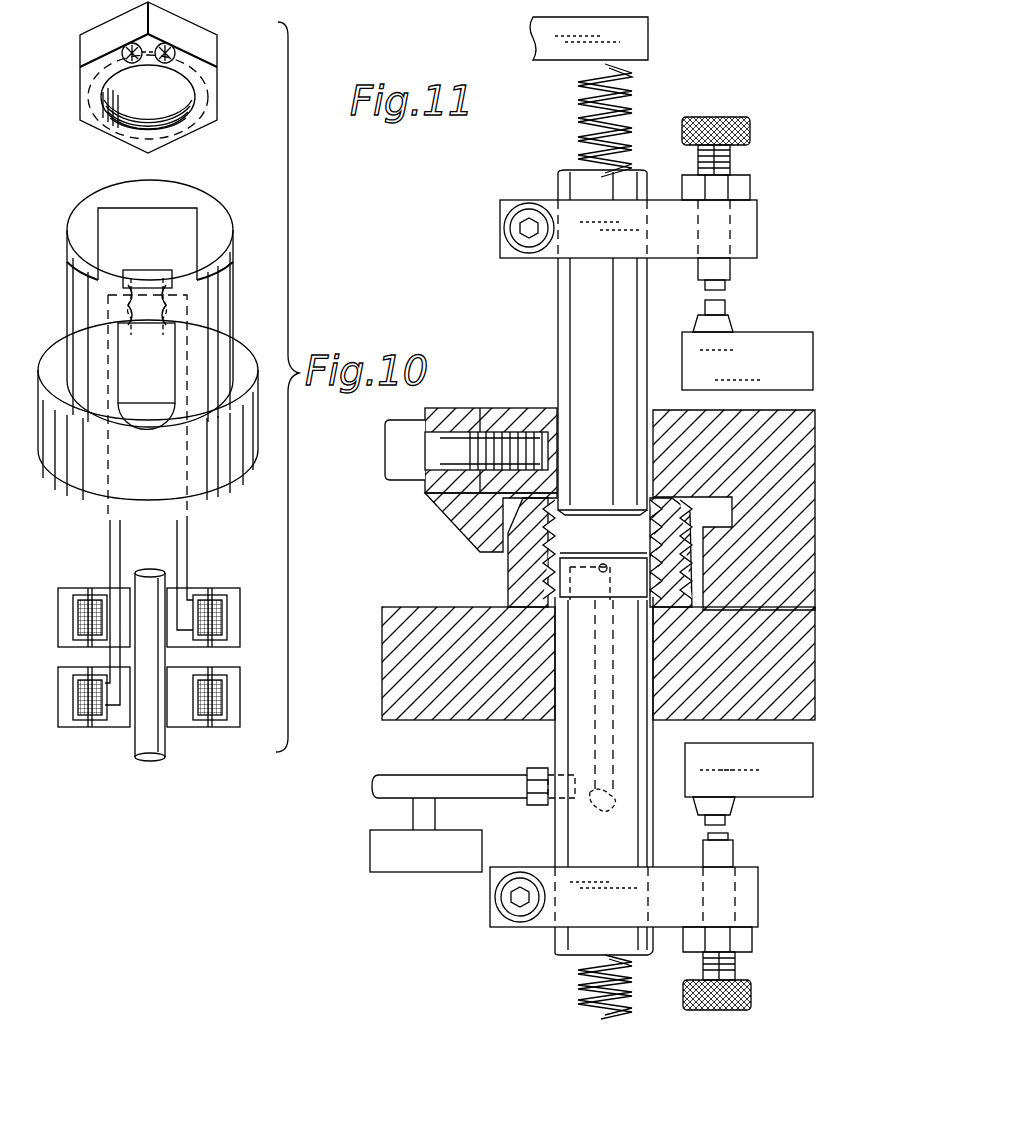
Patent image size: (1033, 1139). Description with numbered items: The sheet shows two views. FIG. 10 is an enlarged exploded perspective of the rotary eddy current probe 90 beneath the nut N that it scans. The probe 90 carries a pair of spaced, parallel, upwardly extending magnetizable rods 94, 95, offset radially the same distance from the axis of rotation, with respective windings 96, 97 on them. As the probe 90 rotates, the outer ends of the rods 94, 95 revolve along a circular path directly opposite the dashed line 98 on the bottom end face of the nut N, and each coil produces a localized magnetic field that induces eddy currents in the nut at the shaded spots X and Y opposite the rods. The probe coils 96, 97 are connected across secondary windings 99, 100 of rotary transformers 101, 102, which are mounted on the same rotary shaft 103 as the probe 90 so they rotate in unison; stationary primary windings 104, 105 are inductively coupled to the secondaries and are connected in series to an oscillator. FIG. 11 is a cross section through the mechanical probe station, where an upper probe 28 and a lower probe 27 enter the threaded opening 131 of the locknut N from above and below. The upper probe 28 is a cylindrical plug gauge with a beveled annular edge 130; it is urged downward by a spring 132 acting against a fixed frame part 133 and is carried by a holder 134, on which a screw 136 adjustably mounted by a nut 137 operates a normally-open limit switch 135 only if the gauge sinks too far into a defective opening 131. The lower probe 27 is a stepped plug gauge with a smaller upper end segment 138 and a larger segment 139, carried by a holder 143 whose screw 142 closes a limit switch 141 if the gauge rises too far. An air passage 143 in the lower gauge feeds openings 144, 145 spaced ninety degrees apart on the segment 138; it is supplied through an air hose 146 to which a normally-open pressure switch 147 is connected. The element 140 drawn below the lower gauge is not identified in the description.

In FIG. 10, the dashed line 98 is at (203, 115).
In FIG. 10, the shaded area X is at (175, 50).
In FIG. 10, the shaded area Y is at (122, 50).
In FIG. 10, the nut N is at (219, 70).
In FIG. 11, the nut N is at (508, 575).
In FIG. 10, the eddy current probe 90 is at (245, 284).
In FIG. 10, the magnetizable rod 94 is at (165, 272).
In FIG. 10, the magnetizable rod 95 is at (126, 272).
In FIG. 10, the winding 96 is at (135, 330).
In FIG. 10, the winding 97 is at (160, 310).
In FIG. 10, the secondary winding 99 is at (205, 600).
In FIG. 10, the secondary winding 100 is at (200, 718).
In FIG. 10, the rotary transformer 101 is at (243, 584).
In FIG. 10, the rotary transformer 102 is at (233, 732).
In FIG. 10, the rotary shaft 103 is at (143, 740).
In FIG. 10, the stationary primary winding 104 is at (220, 628).
In FIG. 10, the stationary primary winding 105 is at (220, 693).
In FIG. 11, the fixed part of the machine frame 133 is at (648, 35).
In FIG. 11, the spring 132 is at (620, 115).
In FIG. 11, the upper probe 28 is at (562, 332).
In FIG. 11, the holder 134 is at (550, 258).
In FIG. 11, the nut 137 is at (748, 196).
In FIG. 11, the screw 136 is at (732, 283).
In FIG. 11, the limit switch 135 is at (750, 345).
In FIG. 11, the beveled annular marginal edge 130 is at (575, 512).
In FIG. 11, the threaded opening 131 is at (553, 540).
In FIG. 11, the opening 145 is at (612, 560).
In FIG. 11, the upper end segment 138 is at (660, 548).
In FIG. 11, the opening 144 is at (540, 598).
In FIG. 11, the larger diameter segment 139 is at (650, 648).
In FIG. 11, the holder 143 is at (545, 927).
In FIG. 11, the lower probe 27 is at (555, 740).
In FIG. 11, the air hose 146 is at (400, 775).
In FIG. 11, the pressure switch 147 is at (370, 872).
In FIG. 11, the limit switch 141 is at (758, 785).
In FIG. 11, the screw 142 is at (735, 858).
In FIG. 11, the spring 140 is at (580, 992).